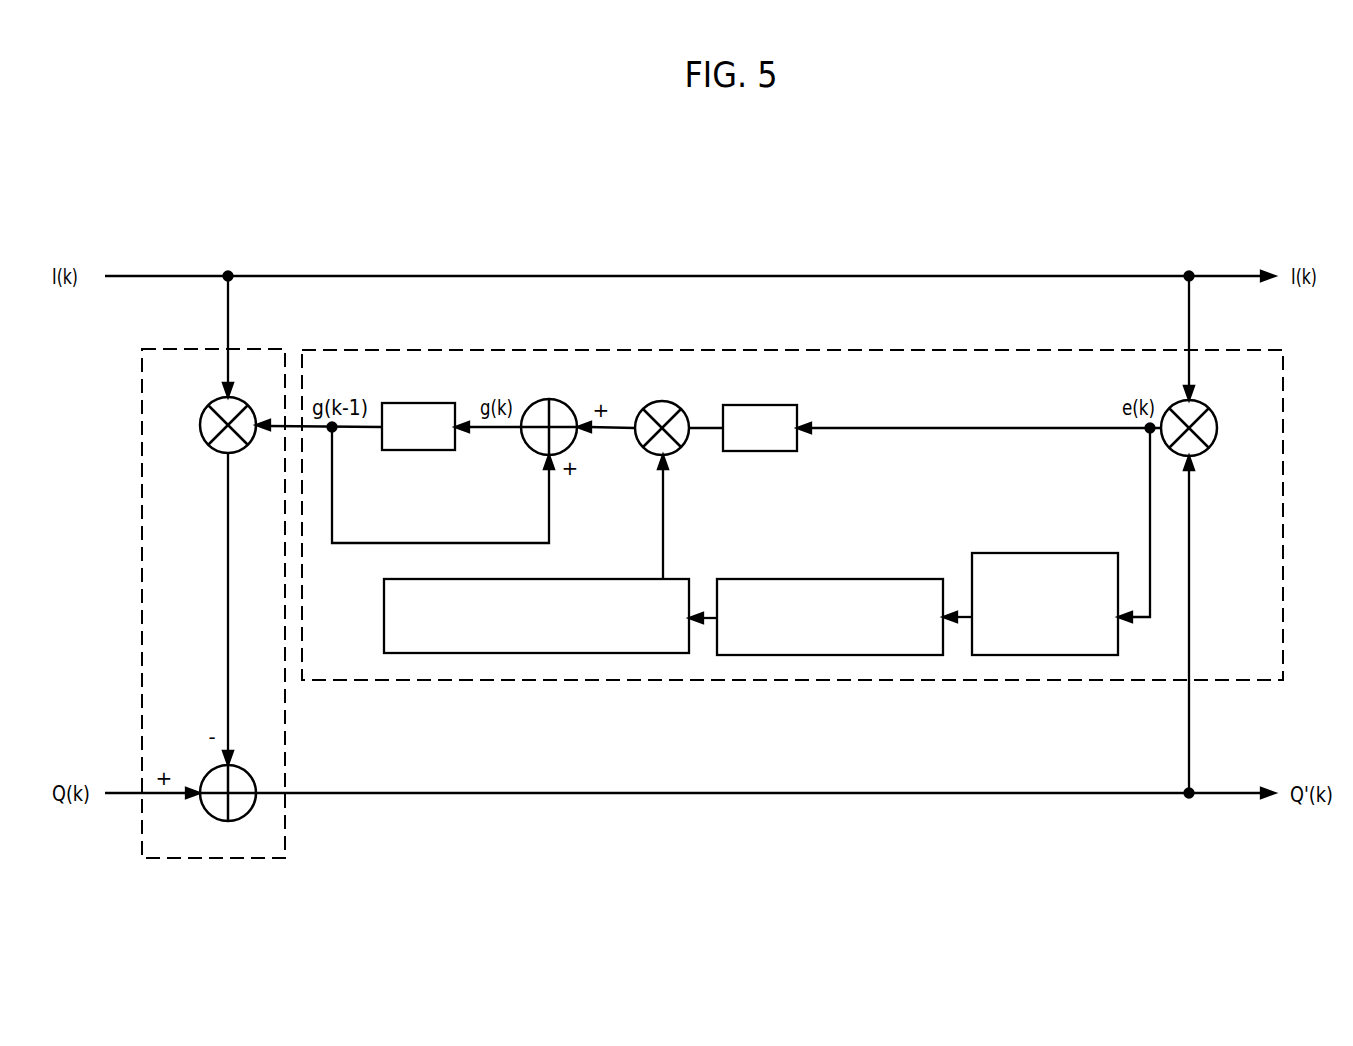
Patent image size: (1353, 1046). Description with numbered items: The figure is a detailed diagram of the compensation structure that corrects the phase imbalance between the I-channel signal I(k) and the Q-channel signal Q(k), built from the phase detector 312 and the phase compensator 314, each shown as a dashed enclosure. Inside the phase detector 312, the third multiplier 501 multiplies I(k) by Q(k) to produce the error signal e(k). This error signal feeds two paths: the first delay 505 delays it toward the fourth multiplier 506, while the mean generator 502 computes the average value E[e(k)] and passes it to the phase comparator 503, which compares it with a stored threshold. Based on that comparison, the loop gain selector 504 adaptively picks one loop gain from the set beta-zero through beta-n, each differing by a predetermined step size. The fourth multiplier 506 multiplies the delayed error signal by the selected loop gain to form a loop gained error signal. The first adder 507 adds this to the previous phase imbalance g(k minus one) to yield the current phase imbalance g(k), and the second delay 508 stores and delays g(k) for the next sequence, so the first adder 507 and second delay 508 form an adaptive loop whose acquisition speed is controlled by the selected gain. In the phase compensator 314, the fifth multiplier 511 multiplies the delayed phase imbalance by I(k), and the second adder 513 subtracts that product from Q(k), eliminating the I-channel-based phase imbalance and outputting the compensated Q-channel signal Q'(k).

The phase detector 312 is at (1235, 350).
The phase compensator 314 is at (157, 349).
The third multiplier 501 is at (1209, 414).
The mean generator 502 is at (1058, 553).
The phase comparator 503 is at (884, 579).
The loop gain selector 504 is at (578, 579).
The first delay 505 is at (751, 405).
The fourth multiplier 506 is at (666, 402).
The first adder 507 is at (553, 401).
The second delay 508 is at (409, 403).
The fifth multiplier 511 is at (206, 409).
The second adder 513 is at (207, 773).